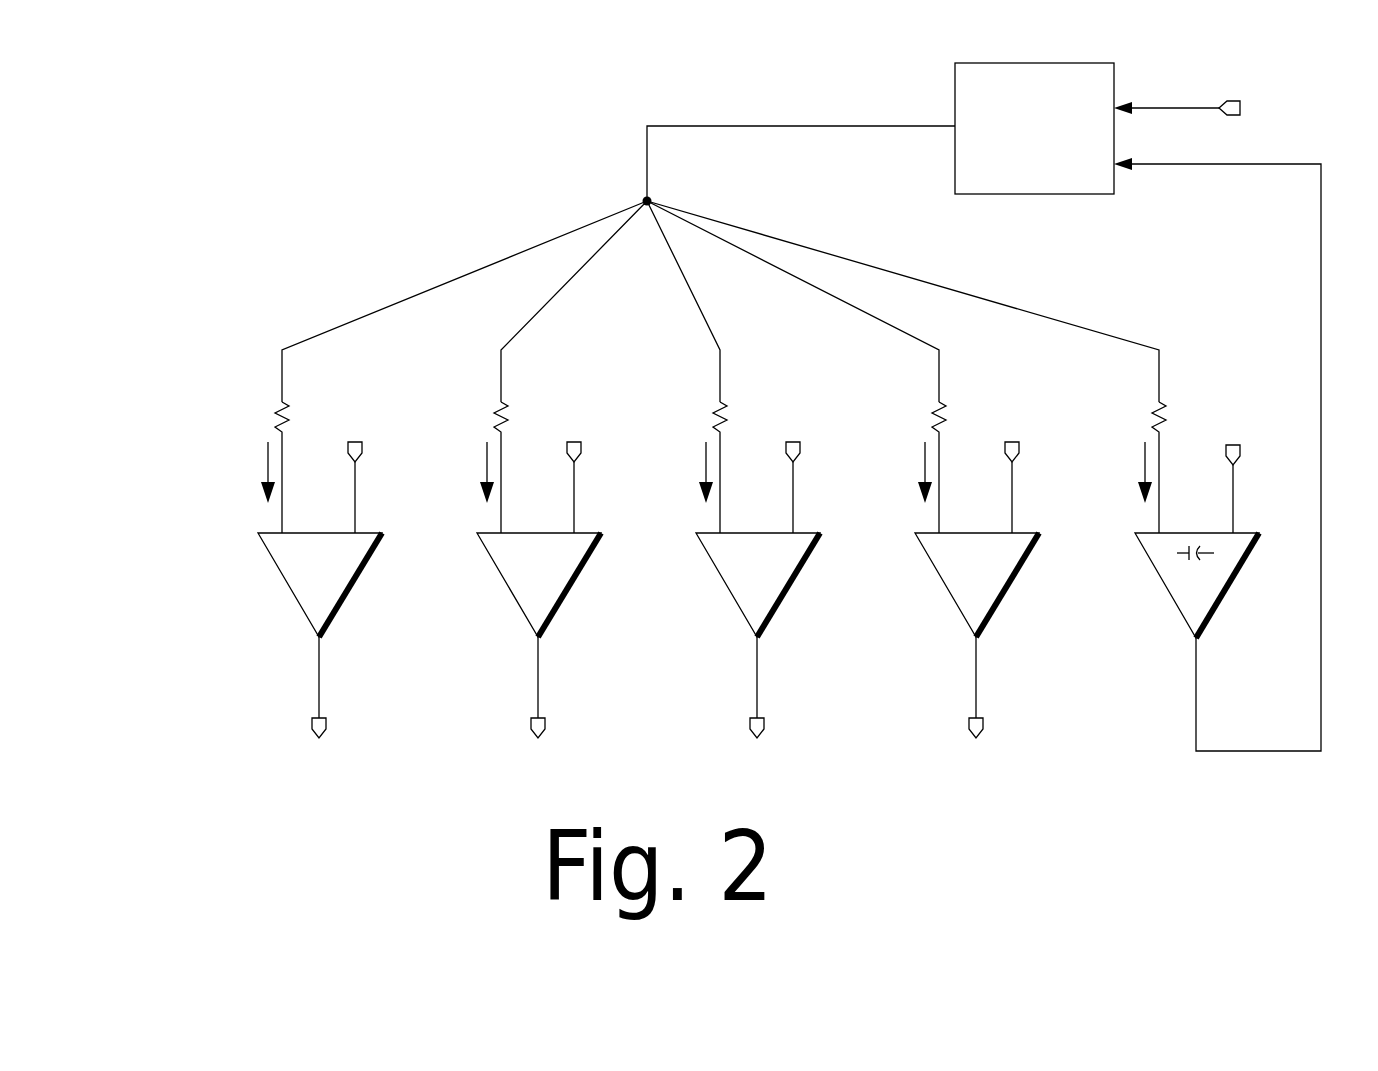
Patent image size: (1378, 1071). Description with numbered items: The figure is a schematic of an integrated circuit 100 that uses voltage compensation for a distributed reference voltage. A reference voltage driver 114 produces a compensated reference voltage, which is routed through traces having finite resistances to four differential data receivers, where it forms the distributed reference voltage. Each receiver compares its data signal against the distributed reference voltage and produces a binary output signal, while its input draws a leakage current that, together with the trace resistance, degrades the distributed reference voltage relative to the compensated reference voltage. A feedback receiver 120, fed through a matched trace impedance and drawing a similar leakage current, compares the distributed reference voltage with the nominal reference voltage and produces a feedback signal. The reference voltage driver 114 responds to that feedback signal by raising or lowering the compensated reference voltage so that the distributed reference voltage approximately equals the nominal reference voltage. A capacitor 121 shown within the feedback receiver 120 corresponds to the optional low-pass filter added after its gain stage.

The integrated circuit 100 is at (447, 156).
The reference voltage driver 114 is at (1110, 83).
The feedback receiver 120 is at (1178, 578).
The compensation capacitor 121 is at (1180, 554).